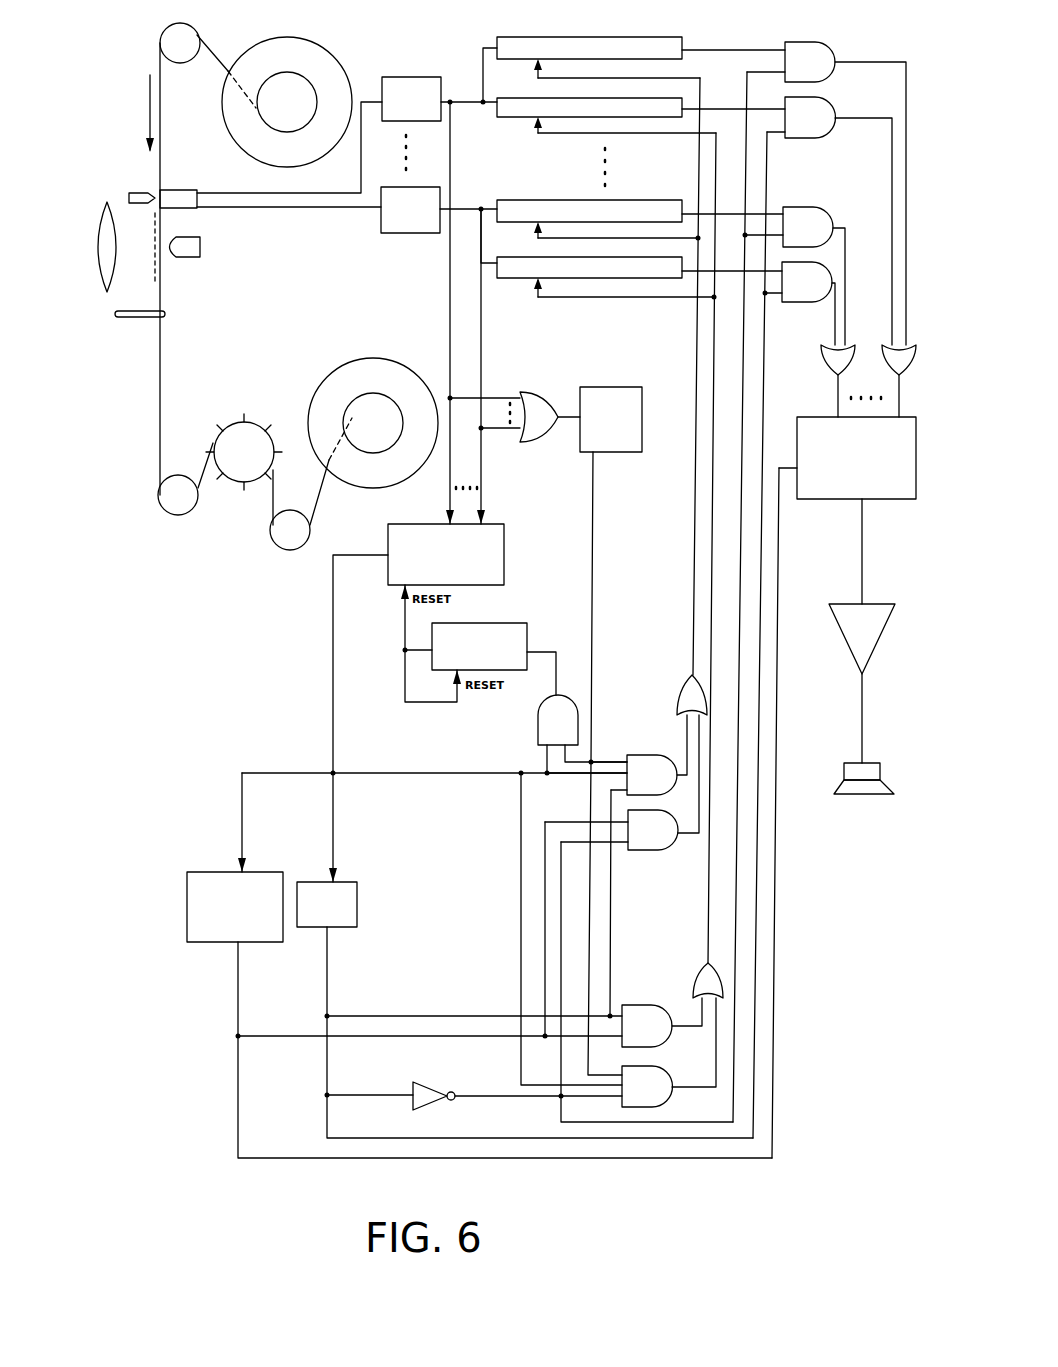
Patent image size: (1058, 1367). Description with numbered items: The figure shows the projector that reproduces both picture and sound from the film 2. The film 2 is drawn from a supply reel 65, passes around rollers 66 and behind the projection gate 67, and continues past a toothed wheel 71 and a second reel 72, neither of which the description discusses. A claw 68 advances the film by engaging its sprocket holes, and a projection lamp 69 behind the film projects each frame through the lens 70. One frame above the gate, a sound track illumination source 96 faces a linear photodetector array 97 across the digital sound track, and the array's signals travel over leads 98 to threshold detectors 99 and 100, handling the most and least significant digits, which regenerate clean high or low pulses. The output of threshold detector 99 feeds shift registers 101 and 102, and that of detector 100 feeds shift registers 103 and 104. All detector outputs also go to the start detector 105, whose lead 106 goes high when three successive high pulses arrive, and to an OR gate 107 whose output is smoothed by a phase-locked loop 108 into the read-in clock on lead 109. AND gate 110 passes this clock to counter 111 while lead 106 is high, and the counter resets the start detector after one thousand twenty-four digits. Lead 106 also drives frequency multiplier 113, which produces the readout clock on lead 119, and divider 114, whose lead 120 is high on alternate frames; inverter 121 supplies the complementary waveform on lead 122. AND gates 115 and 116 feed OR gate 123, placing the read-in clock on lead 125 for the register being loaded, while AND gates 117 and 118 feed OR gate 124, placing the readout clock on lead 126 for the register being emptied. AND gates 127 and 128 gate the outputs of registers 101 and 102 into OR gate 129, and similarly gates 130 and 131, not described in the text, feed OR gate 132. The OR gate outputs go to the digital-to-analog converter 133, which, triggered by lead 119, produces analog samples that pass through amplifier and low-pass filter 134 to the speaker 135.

The film 2 is at (165, 390).
The supply reel 65 is at (328, 52).
The roller 66 is at (163, 35).
The projection gate 67 is at (150, 273).
The claw 68 is at (133, 320).
The projection lamp 69 is at (190, 259).
The lens 70 is at (97, 220).
The sprocket 71 is at (257, 424).
The take-up reel 72 is at (356, 360).
The sound track illumination source 96 is at (133, 190).
The photodetector array 97 is at (183, 190).
The leads 98 is at (250, 214).
The threshold detector 99 is at (402, 76).
The threshold detector 100 is at (399, 236).
The shift register 101 is at (524, 40).
The shift register 102 is at (510, 92).
The shift register 103 is at (514, 201).
The shift register 104 is at (512, 252).
The start detector 105 is at (505, 542).
The lead 106 is at (333, 630).
The OR gate 107 is at (540, 392).
The phase-locked loop 108 is at (615, 387).
The lead 109 is at (596, 532).
The AND gate 110 is at (538, 722).
The counter 111 is at (505, 624).
The frequency multiplier 113 is at (187, 892).
The frequency divider 114 is at (358, 901).
The AND gate 115 is at (645, 755).
The AND gate 116 is at (647, 851).
The AND gate 117 is at (630, 1004).
The AND gate 118 is at (668, 1070).
The lead 119 is at (237, 1008).
The lead 120 is at (332, 991).
The inverter 121 is at (427, 1082).
The lead 122 is at (500, 1093).
The OR gate 123 is at (686, 682).
The OR gate 124 is at (700, 966).
The lead 125 is at (695, 626).
The lead 126 is at (711, 936).
The AND gate 127 is at (815, 42).
The AND gate 128 is at (818, 137).
The OR gate 129 is at (916, 357).
The AND gate 130 is at (815, 208).
The AND gate 131 is at (806, 302).
The OR gate 132 is at (820, 358).
The digital to analog converter 133 is at (916, 460).
The amplifier and low-pass filter 134 is at (890, 640).
The speaker 135 is at (896, 786).